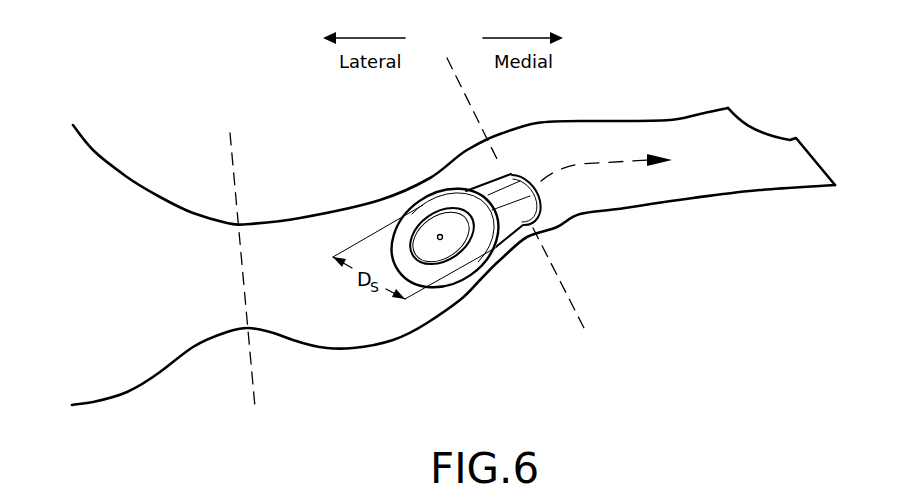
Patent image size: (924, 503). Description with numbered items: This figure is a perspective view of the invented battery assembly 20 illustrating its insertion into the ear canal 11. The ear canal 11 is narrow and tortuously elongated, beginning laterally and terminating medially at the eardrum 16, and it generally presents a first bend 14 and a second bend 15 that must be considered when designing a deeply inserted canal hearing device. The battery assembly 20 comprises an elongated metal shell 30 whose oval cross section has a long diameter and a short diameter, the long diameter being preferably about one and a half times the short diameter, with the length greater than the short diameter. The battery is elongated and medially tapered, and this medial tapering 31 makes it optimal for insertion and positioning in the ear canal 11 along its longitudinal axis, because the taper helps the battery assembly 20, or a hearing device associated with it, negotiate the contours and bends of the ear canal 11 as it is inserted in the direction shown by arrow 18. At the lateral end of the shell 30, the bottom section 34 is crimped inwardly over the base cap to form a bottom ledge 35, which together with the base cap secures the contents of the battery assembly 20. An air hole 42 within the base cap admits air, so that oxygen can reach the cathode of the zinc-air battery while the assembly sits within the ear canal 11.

The ear canal 11 is at (318, 230).
The first bend 14 is at (228, 140).
The second bend 15 is at (573, 307).
The eardrum 16 is at (815, 153).
The arrow 18 is at (569, 169).
The battery assembly 20 is at (470, 172).
The shell 30 is at (510, 217).
The medial tapering 31 is at (521, 173).
The bottom section 34 is at (495, 240).
The bottom ledge 35 is at (418, 217).
The air hole 42 is at (437, 237).